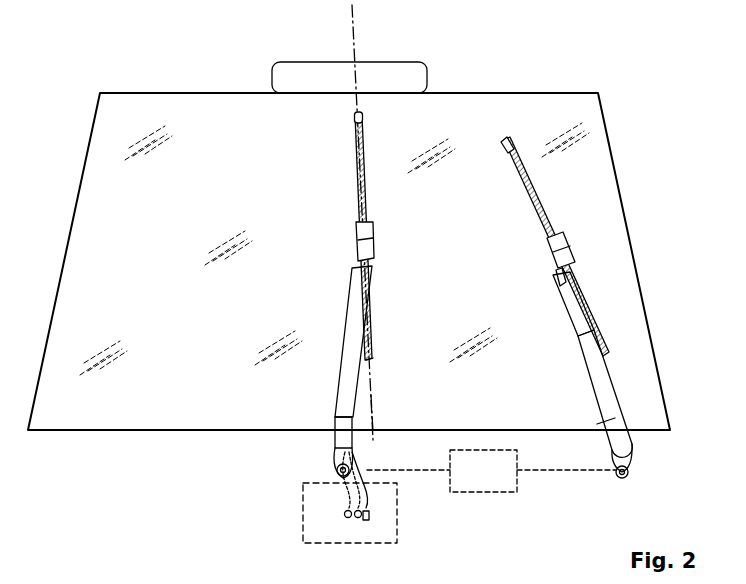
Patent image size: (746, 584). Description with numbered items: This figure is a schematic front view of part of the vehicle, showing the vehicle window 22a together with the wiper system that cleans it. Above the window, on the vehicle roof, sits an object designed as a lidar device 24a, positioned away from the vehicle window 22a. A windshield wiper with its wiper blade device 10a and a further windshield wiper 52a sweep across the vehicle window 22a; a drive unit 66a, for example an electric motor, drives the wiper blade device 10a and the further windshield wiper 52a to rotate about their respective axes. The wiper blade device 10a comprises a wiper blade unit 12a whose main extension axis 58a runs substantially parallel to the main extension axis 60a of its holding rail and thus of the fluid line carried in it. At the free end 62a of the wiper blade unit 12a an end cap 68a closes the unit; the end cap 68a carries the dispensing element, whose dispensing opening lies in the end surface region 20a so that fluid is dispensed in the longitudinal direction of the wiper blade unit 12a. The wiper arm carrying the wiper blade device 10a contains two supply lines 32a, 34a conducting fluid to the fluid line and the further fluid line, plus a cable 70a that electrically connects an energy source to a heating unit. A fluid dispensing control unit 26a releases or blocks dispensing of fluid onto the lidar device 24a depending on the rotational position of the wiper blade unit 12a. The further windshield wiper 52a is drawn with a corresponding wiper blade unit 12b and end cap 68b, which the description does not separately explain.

The wiper blade device 10a is at (342, 185).
The wiper blade unit 12a is at (356, 140).
The second wiper blade 12b is at (600, 240).
The end surface region 20a is at (362, 100).
The vehicle window 22a is at (507, 113).
The lidar device 24a is at (298, 73).
The fluid dispensing control unit 26a is at (300, 525).
The supply line 32a is at (350, 500).
The further supply line 34a is at (361, 500).
The further windshield wiper 52a is at (567, 290).
The main extension axis of the wiper blade unit 58a is at (373, 405).
The main extension axis of the holding rail 60a is at (370, 378).
The free end of the wiper blade unit 62a is at (430, 113).
The drive unit 66a is at (502, 490).
The end cap 68a is at (355, 119).
The second end cap 68b is at (509, 143).
The cable 70a is at (366, 512).